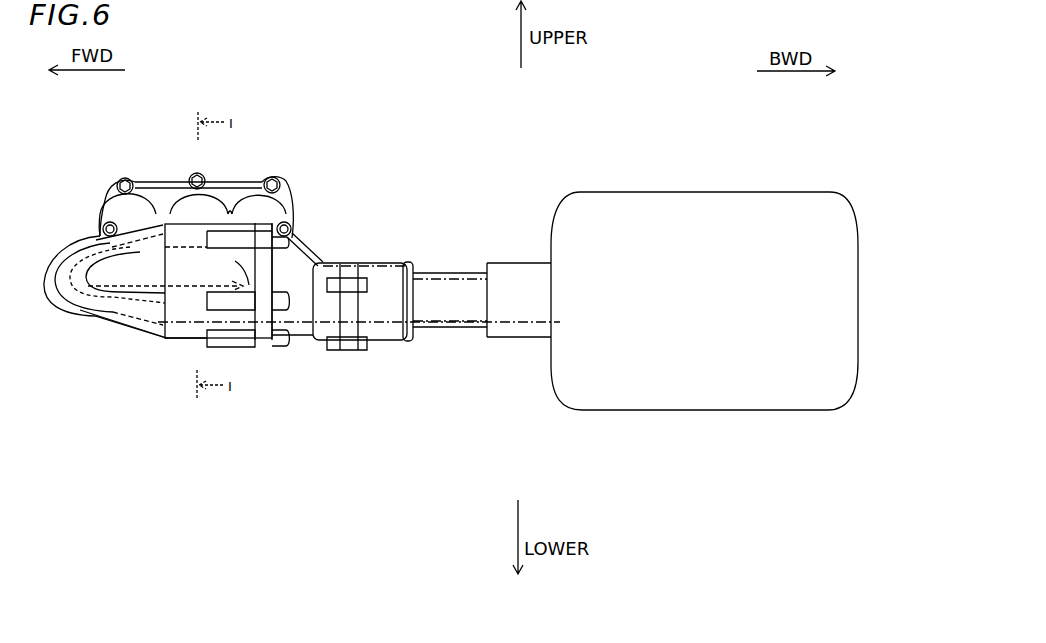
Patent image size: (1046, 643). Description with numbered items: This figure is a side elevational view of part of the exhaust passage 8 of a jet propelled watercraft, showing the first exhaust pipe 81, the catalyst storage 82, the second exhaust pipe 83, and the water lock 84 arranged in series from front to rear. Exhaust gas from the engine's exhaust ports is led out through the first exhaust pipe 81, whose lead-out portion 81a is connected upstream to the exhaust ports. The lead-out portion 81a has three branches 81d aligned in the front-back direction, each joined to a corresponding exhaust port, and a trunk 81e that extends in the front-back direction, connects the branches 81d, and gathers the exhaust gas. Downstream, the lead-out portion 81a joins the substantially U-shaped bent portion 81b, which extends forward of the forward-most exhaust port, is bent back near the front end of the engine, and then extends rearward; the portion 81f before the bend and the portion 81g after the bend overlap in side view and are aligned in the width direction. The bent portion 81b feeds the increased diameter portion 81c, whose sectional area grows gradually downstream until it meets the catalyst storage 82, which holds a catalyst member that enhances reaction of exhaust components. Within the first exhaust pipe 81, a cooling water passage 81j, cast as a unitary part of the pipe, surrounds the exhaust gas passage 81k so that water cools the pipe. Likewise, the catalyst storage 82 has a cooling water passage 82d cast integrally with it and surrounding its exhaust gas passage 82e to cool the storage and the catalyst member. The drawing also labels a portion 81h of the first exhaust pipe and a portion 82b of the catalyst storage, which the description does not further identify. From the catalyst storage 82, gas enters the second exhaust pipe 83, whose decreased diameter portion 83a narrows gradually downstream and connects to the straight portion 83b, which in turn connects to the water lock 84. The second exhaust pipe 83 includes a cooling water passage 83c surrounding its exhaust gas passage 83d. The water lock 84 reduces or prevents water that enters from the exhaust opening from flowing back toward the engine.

The exhaust passage 8 is at (473, 359).
The first exhaust pipe 81 is at (299, 174).
The lead-out portion 81a is at (165, 168).
The bent portion 81b is at (53, 320).
The increased diameter portion 81c is at (146, 338).
The branches 81d is at (136, 180).
The trunk 81e is at (232, 200).
The portion of the bent portion before being bent 81f is at (88, 240).
The portion of the bent portion after being bent 81g is at (70, 320).
The flange portion 81h is at (240, 215).
The cooling water passage 81j is at (113, 318).
The exhaust gas passage 81k is at (102, 219).
The catalyst storage 82 is at (182, 343).
The flange 82b is at (258, 350).
The cooling water passage 82d is at (243, 350).
The exhaust gas passage 82e is at (167, 342).
The second exhaust pipe 83 is at (396, 240).
The decreased diameter portion 83a is at (305, 345).
The straight portion 83b is at (392, 342).
The cooling water passage 83c is at (442, 342).
The exhaust gas passage 83d is at (363, 352).
The water lock 84 is at (707, 218).